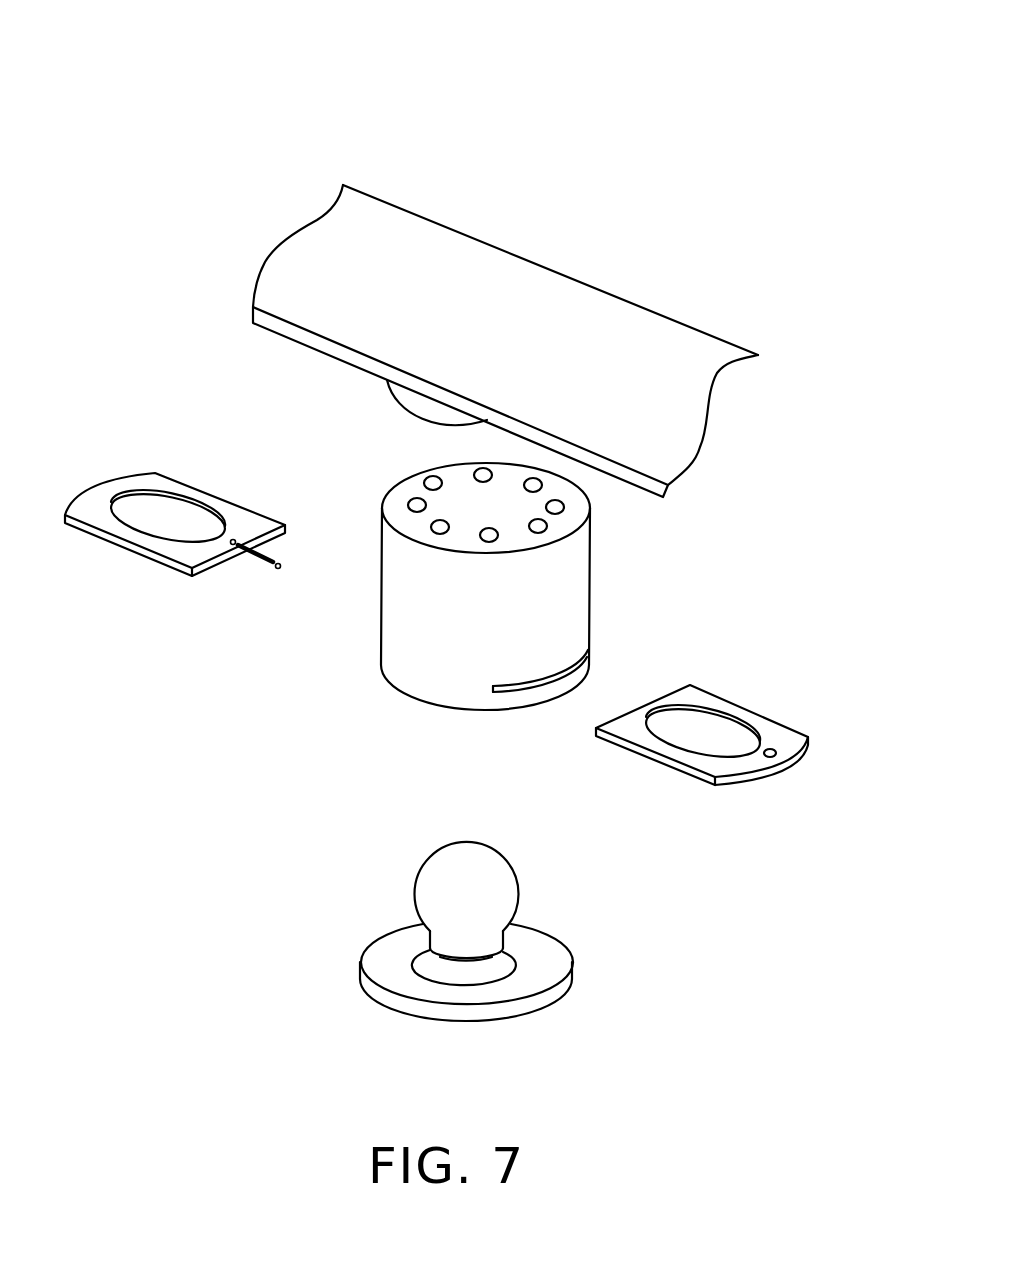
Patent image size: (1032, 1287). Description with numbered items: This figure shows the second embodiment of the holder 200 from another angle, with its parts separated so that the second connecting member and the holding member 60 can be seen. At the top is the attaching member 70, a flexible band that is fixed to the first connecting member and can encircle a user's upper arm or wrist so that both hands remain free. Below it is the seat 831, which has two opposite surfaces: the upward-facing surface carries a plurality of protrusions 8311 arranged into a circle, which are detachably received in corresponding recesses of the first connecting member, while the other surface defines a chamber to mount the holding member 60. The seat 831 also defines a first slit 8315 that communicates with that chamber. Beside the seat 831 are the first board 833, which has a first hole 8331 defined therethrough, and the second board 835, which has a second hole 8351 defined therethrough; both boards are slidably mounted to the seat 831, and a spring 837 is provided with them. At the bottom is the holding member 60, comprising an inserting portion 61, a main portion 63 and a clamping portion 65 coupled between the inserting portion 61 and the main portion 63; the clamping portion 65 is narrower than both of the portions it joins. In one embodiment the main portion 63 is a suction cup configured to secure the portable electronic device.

The holder 200 is at (623, 58).
The attaching member 70 is at (663, 330).
The seat 831 is at (373, 637).
The protrusions 8311 is at (433, 476).
The first slit 8315 is at (586, 664).
The second board 835 is at (125, 468).
The second hole 8351 is at (177, 515).
The spring 837 is at (270, 562).
The first board 833 is at (807, 728).
The first hole 8331 is at (723, 728).
The holding member 60 is at (640, 832).
The inserting portion 61 is at (483, 888).
The clamping portion 65 is at (498, 943).
The main portion 63 is at (550, 972).